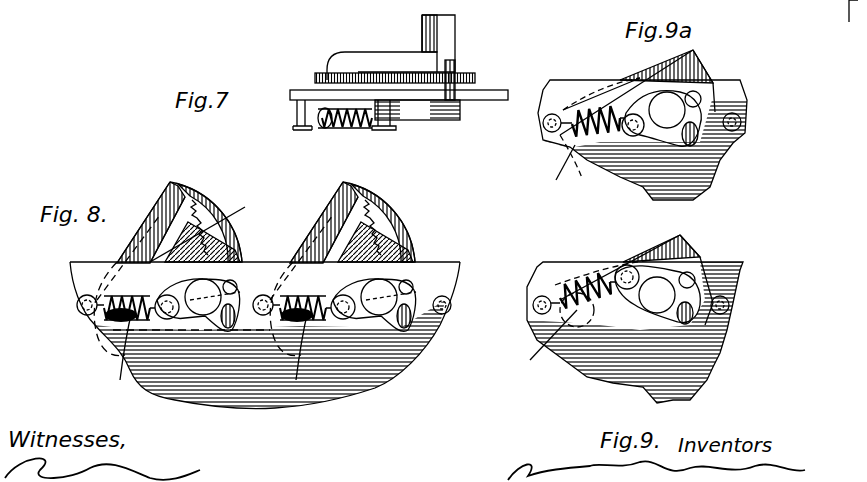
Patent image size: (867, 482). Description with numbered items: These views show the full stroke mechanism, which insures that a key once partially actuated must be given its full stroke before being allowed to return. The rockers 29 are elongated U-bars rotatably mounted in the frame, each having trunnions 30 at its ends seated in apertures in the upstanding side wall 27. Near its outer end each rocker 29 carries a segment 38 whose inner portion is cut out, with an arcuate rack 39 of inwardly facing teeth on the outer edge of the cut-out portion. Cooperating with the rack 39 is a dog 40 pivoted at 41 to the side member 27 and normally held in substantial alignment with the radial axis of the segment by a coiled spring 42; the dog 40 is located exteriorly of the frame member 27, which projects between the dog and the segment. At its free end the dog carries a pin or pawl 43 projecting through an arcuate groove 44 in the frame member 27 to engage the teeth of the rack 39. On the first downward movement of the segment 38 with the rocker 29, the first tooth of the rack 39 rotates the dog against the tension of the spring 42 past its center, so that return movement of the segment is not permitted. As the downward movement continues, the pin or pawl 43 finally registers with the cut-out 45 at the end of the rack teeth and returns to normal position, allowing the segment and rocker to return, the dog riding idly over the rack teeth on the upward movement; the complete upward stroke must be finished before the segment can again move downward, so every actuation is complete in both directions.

In FIG. 7, the side wall 27 is at (488, 100).
In FIG. 8, the side wall 27 is at (462, 262).
In FIG. 9A, the side wall 27 is at (742, 137).
In FIG. 9, the side wall 27 is at (735, 266).
In FIG. 7, the rocker 29 is at (450, 27).
In FIG. 8, the rocker 29 is at (207, 226).
In FIG. 7, the trunnion 30 is at (325, 82).
In FIG. 8, the trunnion 30 is at (120, 380).
In FIG. 9A, the trunnion 30 is at (561, 166).
In FIG. 9, the trunnion 30 is at (552, 337).
In FIG. 8, the segment 38 is at (165, 203).
In FIG. 9A, the segment 38 is at (700, 64).
In FIG. 9, the segment 38 is at (634, 280).
In FIG. 8, the rack 39 is at (200, 222).
In FIG. 8, the dog 40 is at (172, 322).
In FIG. 9A, the dog 40 is at (632, 113).
In FIG. 9, the dog 40 is at (630, 290).
In FIG. 7, the pivot 41 is at (428, 120).
In FIG. 8, the pivot 41 is at (203, 316).
In FIG. 9A, the pivot 41 is at (663, 119).
In FIG. 9, the pivot 41 is at (657, 294).
In FIG. 7, the coiled spring 42 is at (336, 128).
In FIG. 8, the coiled spring 42 is at (117, 320).
In FIG. 9A, the coiled spring 42 is at (590, 112).
In FIG. 9, the coiled spring 42 is at (582, 282).
In FIG. 7, the pin or pawl 43 is at (452, 88).
In FIG. 8, the pin or pawl 43 is at (240, 297).
In FIG. 9A, the pin or pawl 43 is at (703, 101).
In FIG. 9, the pin or pawl 43 is at (695, 318).
In FIG. 8, the arcuate groove 44 is at (232, 330).
In FIG. 9A, the arcuate groove 44 is at (700, 142).
In FIG. 9, the arcuate groove 44 is at (688, 326).
In FIG. 8, the cut-out 45 is at (187, 206).